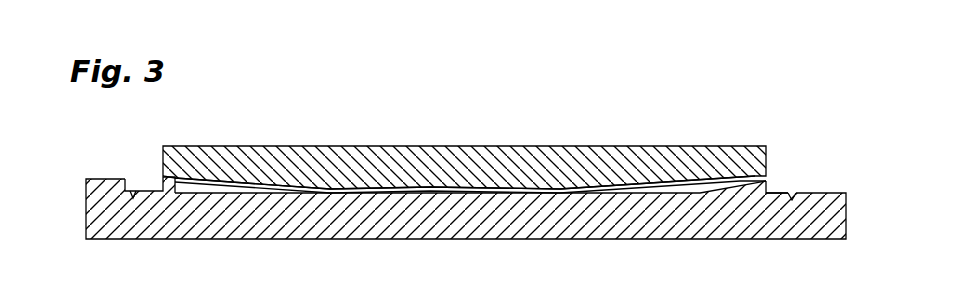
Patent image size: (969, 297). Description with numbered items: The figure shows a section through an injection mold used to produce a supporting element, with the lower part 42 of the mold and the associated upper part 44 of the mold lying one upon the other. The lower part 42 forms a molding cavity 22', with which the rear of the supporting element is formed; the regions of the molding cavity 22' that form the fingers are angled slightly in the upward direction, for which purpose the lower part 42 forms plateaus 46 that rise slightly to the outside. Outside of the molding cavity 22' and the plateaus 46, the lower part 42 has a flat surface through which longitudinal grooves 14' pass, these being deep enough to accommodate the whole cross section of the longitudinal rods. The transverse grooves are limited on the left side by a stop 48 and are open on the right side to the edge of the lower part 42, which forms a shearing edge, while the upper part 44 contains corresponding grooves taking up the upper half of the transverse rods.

The lower part of the mold 42 is at (816, 189).
The upper part of the mold 44 is at (381, 143).
The molding cavity 22' is at (470, 147).
The stop 48 is at (133, 181).
The plateaus 46 is at (773, 191).
The longitudinal grooves 14' is at (486, 150).